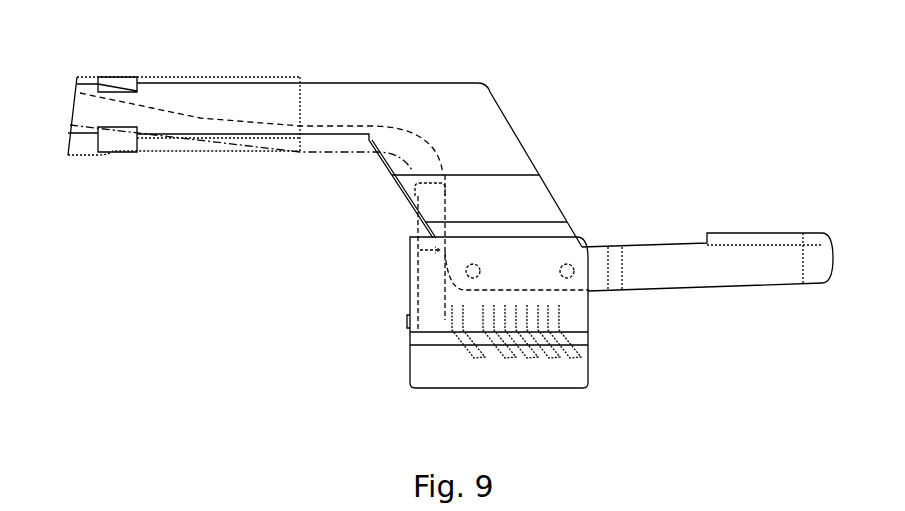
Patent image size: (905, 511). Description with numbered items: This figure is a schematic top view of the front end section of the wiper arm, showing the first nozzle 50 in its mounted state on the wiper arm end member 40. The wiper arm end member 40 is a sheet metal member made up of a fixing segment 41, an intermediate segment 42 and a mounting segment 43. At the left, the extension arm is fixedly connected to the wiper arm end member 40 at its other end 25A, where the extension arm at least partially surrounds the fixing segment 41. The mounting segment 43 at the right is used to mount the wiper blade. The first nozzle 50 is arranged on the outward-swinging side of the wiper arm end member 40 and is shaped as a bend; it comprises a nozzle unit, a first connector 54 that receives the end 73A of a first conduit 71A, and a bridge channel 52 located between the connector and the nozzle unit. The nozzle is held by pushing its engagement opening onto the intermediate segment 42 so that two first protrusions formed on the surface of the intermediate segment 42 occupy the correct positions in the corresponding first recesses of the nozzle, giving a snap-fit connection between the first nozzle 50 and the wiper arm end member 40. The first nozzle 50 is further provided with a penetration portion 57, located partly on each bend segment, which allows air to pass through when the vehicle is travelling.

The wiper arm end member 40 is at (548, 148).
The fixing segment 41 is at (354, 95).
The intermediate segment 42 is at (492, 113).
The mounting segment 43 is at (770, 276).
The other end of the extension arm 25A is at (256, 94).
The end of the first conduit 73A is at (427, 167).
The first conduit 71A is at (318, 143).
The first connector 54 is at (423, 200).
The bridge channel 52 is at (423, 276).
The first nozzle 50 is at (404, 389).
The penetration portion 57 is at (560, 357).